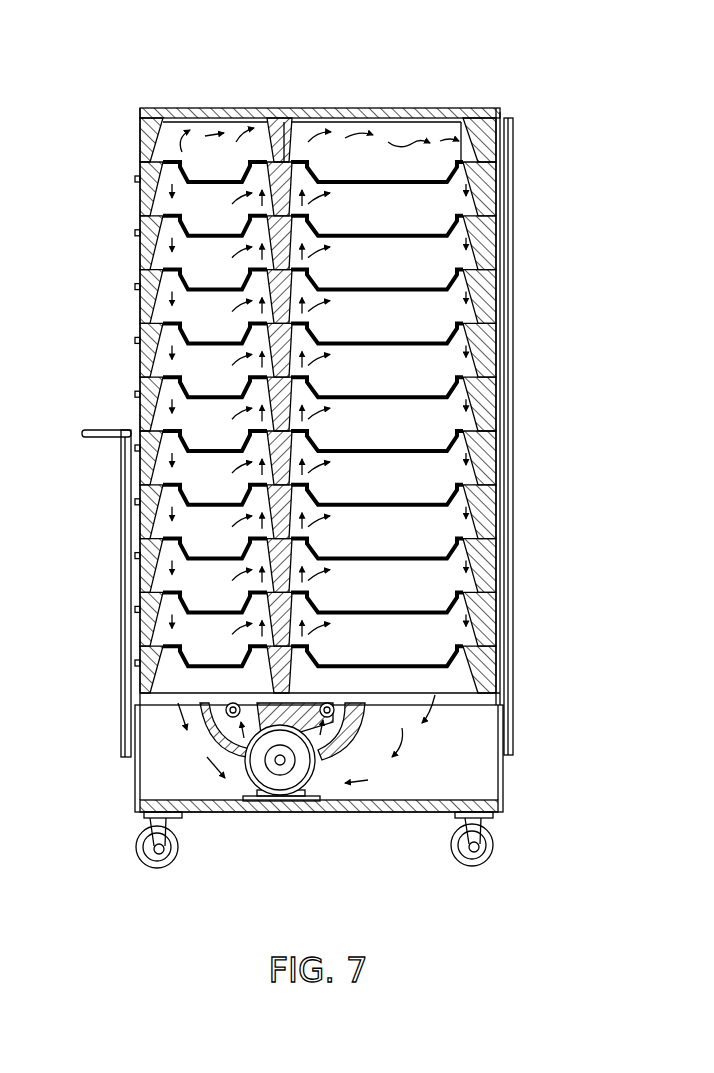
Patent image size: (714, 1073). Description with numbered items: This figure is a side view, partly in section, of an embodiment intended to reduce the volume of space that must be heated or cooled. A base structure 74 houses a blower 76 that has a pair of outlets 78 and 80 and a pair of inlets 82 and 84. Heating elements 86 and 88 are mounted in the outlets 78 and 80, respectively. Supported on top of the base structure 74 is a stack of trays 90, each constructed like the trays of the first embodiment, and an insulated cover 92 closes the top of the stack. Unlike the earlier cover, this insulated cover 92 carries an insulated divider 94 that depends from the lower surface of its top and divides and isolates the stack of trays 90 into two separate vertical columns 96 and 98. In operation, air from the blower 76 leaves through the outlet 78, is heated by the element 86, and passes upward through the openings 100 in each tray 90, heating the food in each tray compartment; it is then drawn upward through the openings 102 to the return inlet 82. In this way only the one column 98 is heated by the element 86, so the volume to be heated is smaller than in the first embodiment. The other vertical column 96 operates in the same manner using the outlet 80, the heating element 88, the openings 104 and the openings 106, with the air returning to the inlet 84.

The base structure 74 is at (505, 800).
The blower 76 is at (280, 783).
The outlet 78 is at (228, 725).
The outlet 80 is at (323, 740).
The inlet 82 is at (157, 760).
The inlet 84 is at (420, 730).
The heating element 86 is at (240, 740).
The heating element 88 is at (363, 743).
The tray 90 is at (140, 147).
The insulated cover 92 is at (380, 108).
The insulated divider 94 is at (285, 128).
The vertical column 96 is at (414, 142).
The vertical column 98 is at (192, 140).
The openings 100 is at (256, 152).
The openings 102 is at (153, 108).
The openings 104 is at (301, 156).
The openings 106 is at (468, 118).